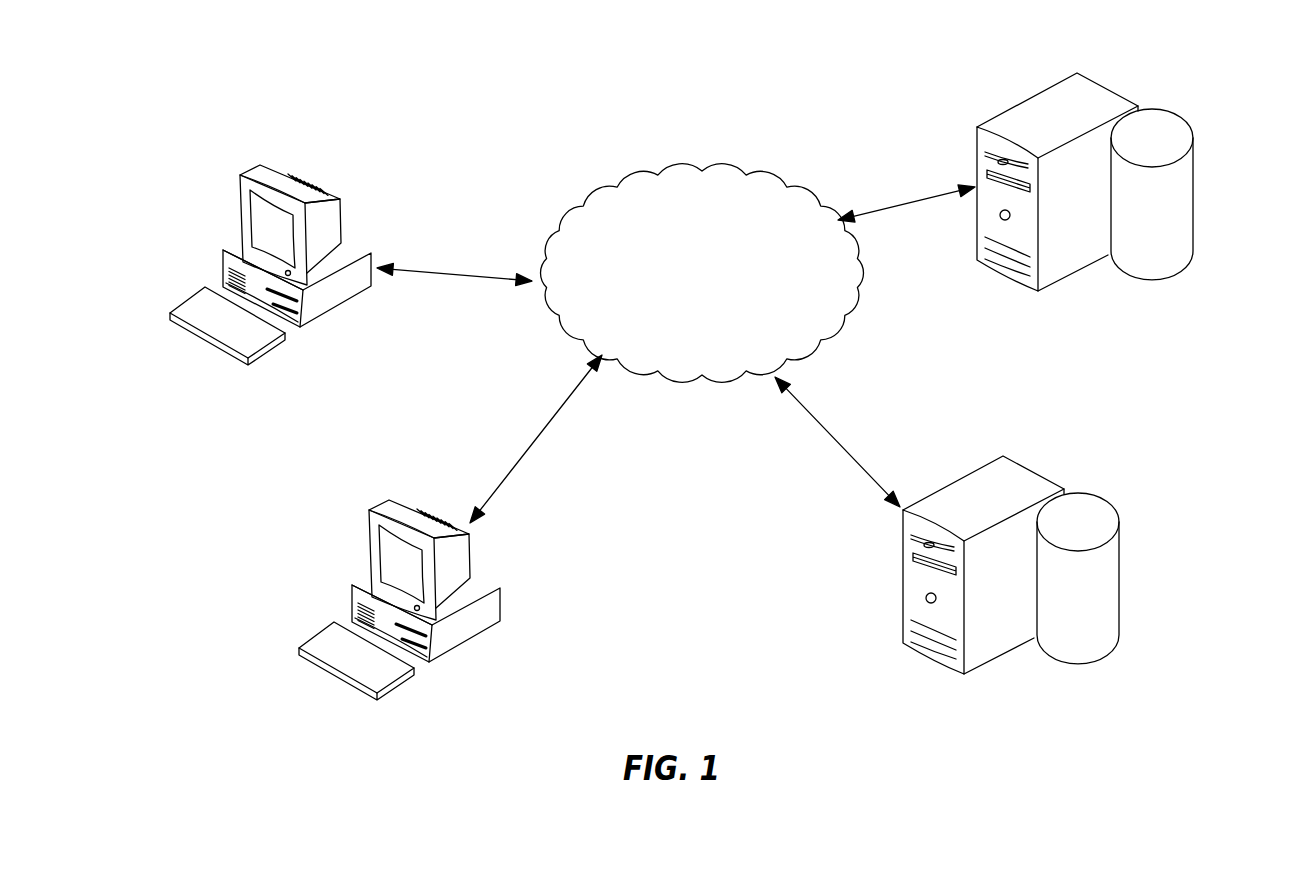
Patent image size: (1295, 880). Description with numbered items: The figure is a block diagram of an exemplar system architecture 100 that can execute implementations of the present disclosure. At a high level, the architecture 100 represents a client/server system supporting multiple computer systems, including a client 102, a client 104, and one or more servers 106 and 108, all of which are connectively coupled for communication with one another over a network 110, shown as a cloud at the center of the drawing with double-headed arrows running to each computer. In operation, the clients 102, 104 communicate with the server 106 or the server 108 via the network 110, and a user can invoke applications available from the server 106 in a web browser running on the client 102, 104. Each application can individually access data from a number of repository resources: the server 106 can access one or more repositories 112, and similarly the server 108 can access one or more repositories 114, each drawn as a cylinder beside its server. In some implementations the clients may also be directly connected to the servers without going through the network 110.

The architecture 100 is at (495, 81).
The client 102 is at (342, 190).
The client 104 is at (498, 589).
The server 106 is at (1078, 305).
The server 108 is at (1005, 688).
The network 110 is at (702, 163).
The repositories 112 is at (1188, 125).
The repositories 114 is at (1117, 510).